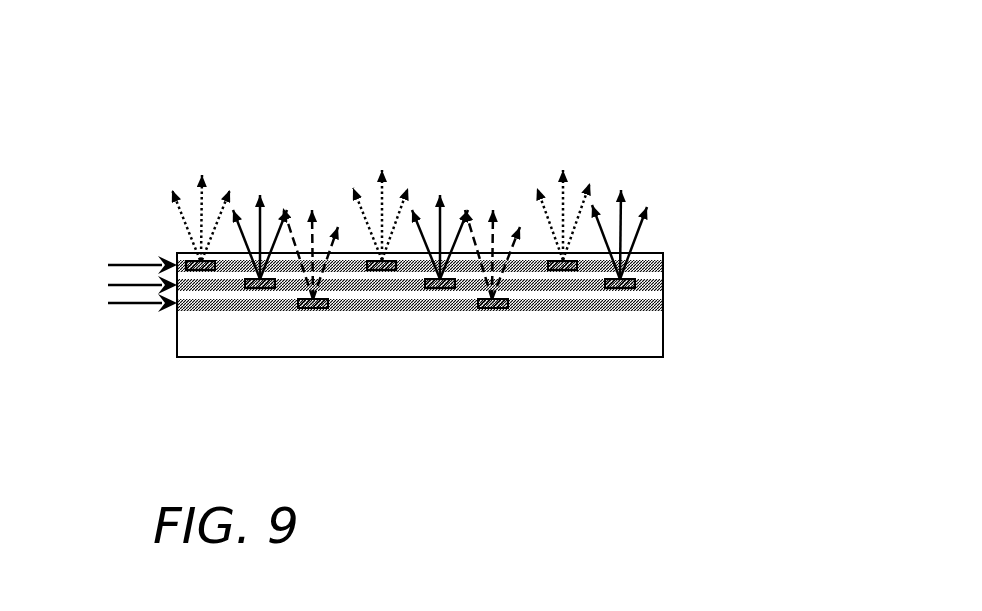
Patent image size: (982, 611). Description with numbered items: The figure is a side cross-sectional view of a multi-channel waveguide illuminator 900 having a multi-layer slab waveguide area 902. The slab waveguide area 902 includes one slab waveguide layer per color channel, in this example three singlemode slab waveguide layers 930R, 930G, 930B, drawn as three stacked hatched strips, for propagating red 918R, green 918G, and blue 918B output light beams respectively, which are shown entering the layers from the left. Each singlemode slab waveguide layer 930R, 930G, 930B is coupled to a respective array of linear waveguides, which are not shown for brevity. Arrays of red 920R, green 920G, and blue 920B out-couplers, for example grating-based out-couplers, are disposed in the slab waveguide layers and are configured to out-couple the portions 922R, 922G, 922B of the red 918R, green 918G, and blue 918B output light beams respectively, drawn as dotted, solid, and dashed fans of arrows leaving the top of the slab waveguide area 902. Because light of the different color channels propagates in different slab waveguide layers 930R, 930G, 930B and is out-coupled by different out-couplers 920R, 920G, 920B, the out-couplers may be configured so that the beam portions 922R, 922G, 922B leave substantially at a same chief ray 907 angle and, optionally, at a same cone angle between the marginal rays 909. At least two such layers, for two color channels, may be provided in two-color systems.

The multi-channel waveguide illuminator 900 is at (525, 110).
The slab waveguide area 902 is at (650, 342).
The chief ray 907 is at (625, 200).
The marginal rays 909 is at (601, 212).
The red output light beam 918R is at (133, 264).
The green output light beam 918G is at (117, 286).
The blue output light beam 918B is at (148, 305).
The red out-couplers 920R is at (200, 271).
The green out-couplers 920G is at (263, 289).
The blue out-couplers 920B is at (320, 309).
The out-coupled portion of red output light beam 922R is at (240, 183).
The out-coupled portion of green output light beam 922G is at (297, 195).
The out-coupled portion of blue output light beam 922B is at (352, 210).
The red singlemode slab waveguide layer 930R is at (663, 268).
The green singlemode slab waveguide layer 930G is at (663, 287).
The blue singlemode slab waveguide layer 930B is at (663, 306).